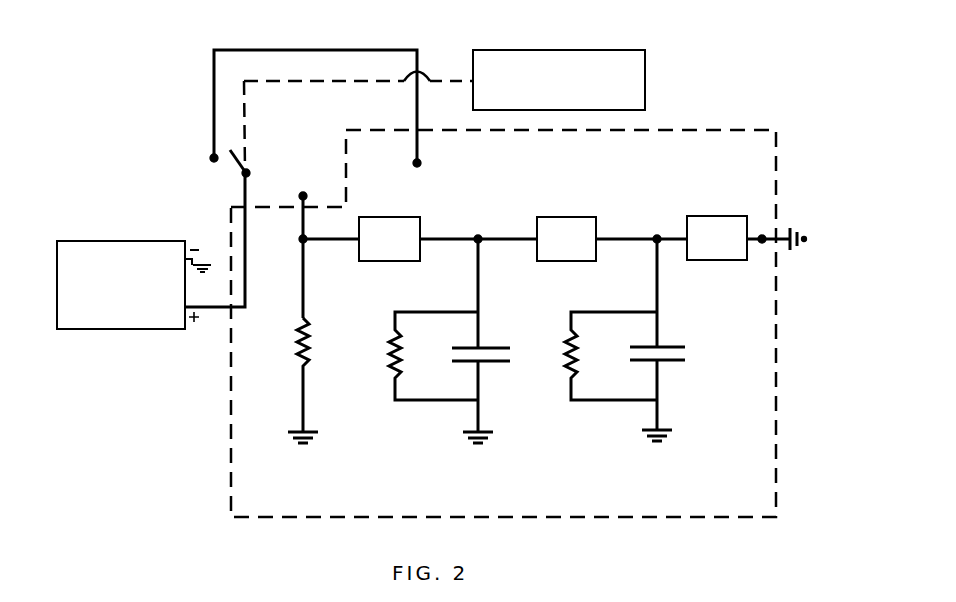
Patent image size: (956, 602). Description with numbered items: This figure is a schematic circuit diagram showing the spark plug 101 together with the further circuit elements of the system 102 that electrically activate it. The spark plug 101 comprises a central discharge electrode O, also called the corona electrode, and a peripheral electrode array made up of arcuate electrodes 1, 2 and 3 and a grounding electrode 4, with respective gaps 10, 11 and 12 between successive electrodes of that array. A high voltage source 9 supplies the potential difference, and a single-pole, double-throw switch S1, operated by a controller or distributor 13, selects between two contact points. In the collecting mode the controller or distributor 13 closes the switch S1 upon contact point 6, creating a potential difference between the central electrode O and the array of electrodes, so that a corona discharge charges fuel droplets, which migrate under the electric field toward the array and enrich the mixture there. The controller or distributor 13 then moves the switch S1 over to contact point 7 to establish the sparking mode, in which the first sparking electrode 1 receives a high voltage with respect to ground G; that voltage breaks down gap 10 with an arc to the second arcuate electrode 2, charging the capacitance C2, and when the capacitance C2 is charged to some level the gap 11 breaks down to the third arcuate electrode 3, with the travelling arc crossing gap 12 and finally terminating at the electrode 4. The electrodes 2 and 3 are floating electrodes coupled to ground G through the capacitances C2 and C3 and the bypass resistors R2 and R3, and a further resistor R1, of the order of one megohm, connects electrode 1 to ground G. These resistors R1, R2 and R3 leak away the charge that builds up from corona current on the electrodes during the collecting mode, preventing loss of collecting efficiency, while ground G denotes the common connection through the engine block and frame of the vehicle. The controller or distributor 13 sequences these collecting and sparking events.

The first sparking electrode 1 is at (300, 242).
The second arcuate electrode 2 is at (476, 243).
The third arcuate electrode 3 is at (655, 244).
The grounding electrode 4 is at (762, 244).
The contact point 6 is at (212, 157).
The contact point 7 is at (303, 194).
The high voltage source 9 is at (140, 328).
The gap 10 is at (396, 262).
The gap 11 is at (582, 262).
The gap 12 is at (716, 200).
The controller or distributor 13 is at (545, 52).
The spark plug 101 is at (660, 518).
The system 102 is at (190, 435).
The central discharge electrode O is at (421, 163).
The single-pole, double-throw switch S1 is at (246, 173).
The resistor R1 is at (300, 344).
The bypass resistor R2 is at (392, 342).
The bypass resistor R3 is at (568, 358).
The capacitance C2 is at (488, 345).
The capacitance C3 is at (672, 340).
The ground G is at (298, 443).